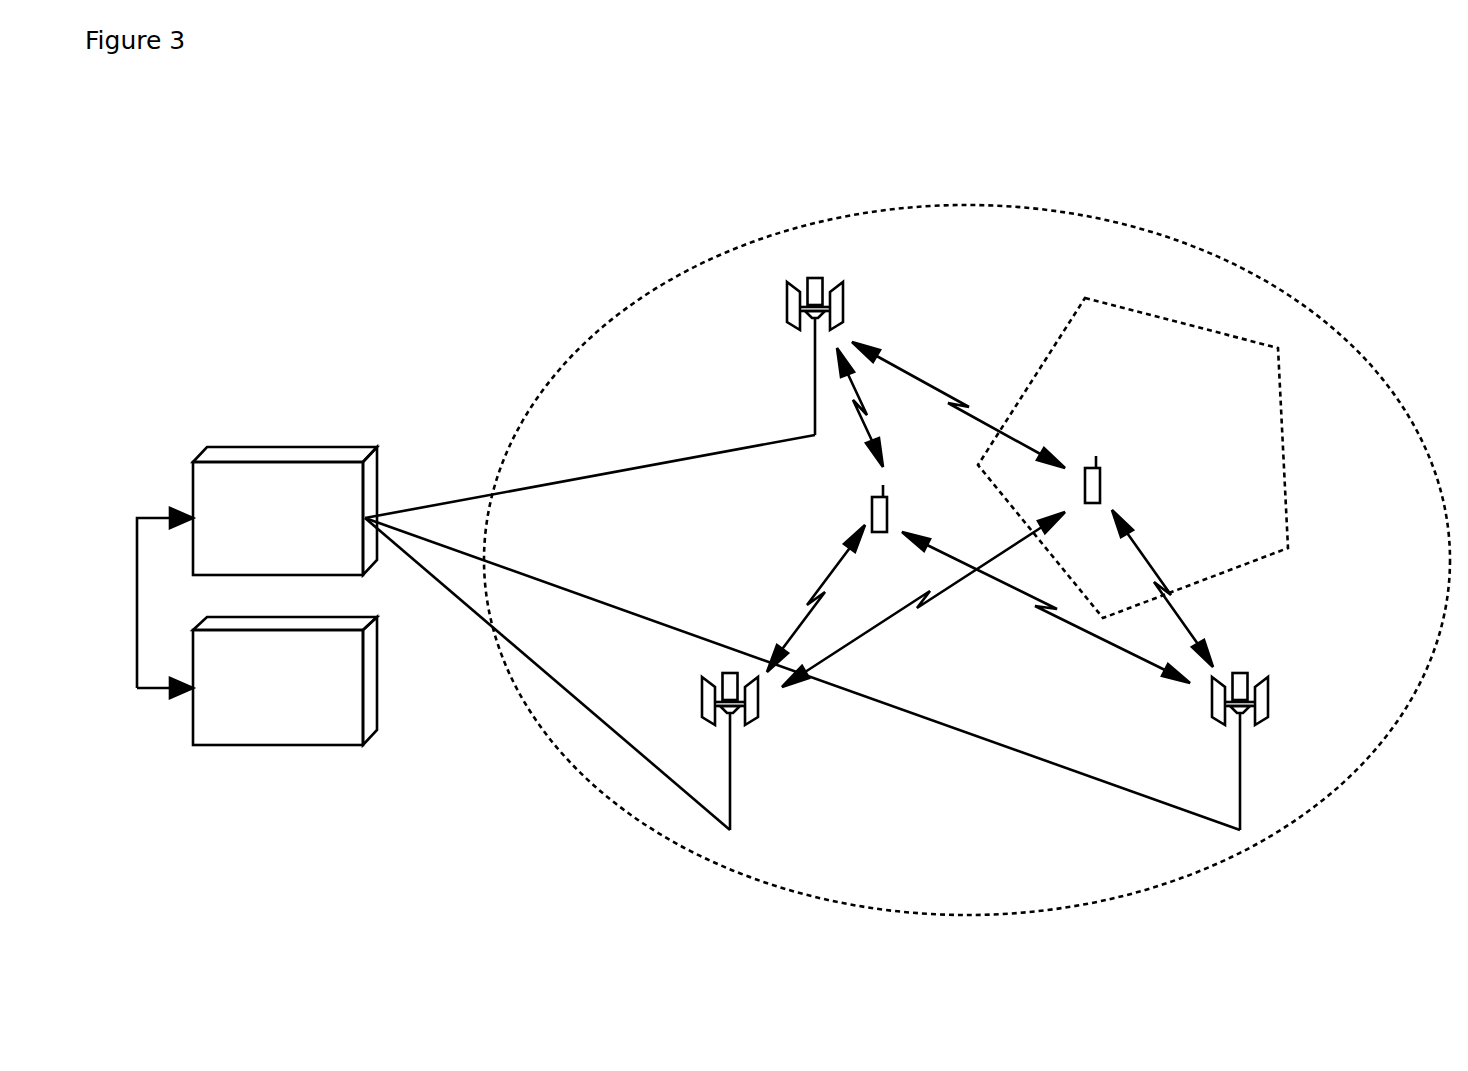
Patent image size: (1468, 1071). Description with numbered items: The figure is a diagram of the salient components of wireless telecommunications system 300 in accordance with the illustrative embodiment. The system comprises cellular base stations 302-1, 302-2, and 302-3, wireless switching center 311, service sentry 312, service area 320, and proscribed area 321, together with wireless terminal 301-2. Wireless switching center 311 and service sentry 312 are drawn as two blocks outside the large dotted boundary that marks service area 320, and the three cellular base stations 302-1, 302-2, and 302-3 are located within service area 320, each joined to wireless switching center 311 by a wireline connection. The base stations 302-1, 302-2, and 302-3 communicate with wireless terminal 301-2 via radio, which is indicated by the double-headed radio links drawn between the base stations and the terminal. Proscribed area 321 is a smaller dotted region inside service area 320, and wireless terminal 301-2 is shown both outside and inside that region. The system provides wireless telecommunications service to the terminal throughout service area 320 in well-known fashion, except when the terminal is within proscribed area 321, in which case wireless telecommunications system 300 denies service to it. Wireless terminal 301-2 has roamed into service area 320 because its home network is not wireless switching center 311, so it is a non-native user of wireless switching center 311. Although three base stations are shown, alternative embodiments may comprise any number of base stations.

The wireless telecommunications system 300 is at (684, 498).
The wireless switching center 311 is at (286, 493).
The service sentry 312 is at (286, 663).
The service area 320 is at (967, 549).
The proscribed area 321 is at (1172, 458).
The cellular base station 302-1 is at (780, 356).
The cellular base station 302-2 is at (765, 751).
The cellular base station 302-3 is at (1275, 751).
The wireless terminal 301-2 is at (1034, 494).